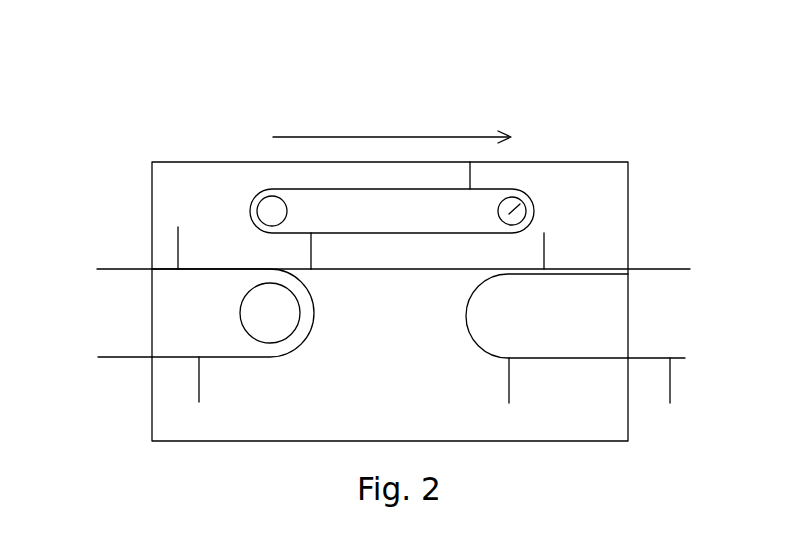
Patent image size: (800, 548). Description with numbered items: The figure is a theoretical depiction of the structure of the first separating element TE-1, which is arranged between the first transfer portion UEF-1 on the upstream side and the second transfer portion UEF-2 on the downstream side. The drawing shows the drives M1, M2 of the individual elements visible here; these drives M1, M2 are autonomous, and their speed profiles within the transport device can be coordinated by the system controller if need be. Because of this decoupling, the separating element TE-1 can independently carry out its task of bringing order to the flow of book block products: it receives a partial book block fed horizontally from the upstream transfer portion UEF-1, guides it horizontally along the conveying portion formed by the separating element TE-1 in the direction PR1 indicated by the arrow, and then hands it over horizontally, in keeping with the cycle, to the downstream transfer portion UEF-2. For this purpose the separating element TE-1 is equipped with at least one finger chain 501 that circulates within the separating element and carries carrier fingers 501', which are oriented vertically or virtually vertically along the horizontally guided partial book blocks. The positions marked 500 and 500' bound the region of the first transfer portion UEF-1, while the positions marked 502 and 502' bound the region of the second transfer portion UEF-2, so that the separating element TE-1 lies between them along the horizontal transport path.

The first boundary position of first environment field UEF-1 500 is at (118, 400).
The second boundary position of first environment field UEF-1 500' is at (174, 235).
The finger chain 501 is at (233, 133).
The carrier fingers 501' is at (520, 116).
The first boundary position of second environment field UEF-2 502 is at (532, 237).
The second boundary position of second environment field UEF-2 502' is at (648, 402).
The first separating element TE-1 is at (470, 210).
The direction of movement of the transfer element PR1 is at (392, 121).
The drive M1 is at (347, 313).
The drive M2 is at (536, 208).
The first transfer portion UEF-1 is at (183, 313).
The second transfer portion UEF-2 is at (595, 316).